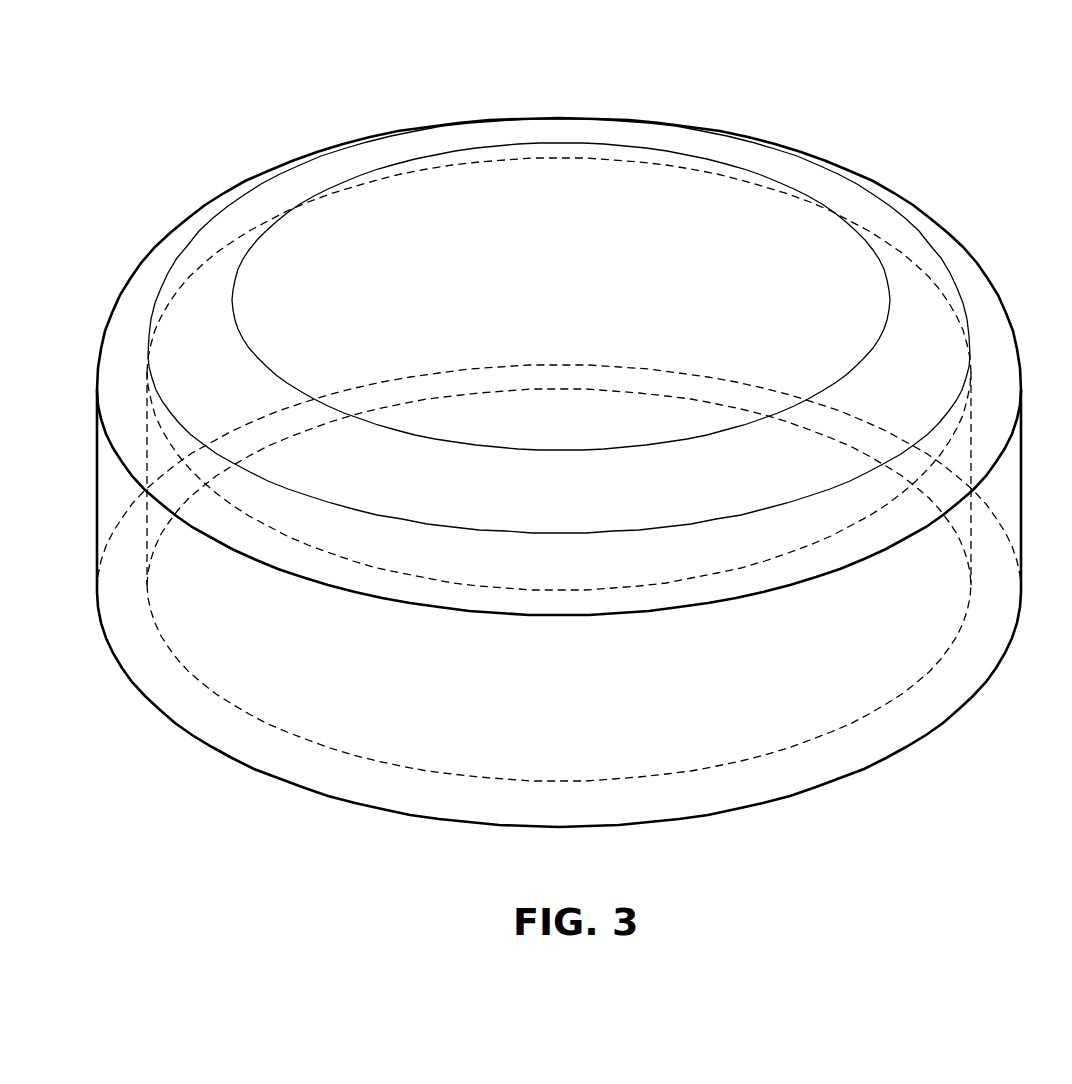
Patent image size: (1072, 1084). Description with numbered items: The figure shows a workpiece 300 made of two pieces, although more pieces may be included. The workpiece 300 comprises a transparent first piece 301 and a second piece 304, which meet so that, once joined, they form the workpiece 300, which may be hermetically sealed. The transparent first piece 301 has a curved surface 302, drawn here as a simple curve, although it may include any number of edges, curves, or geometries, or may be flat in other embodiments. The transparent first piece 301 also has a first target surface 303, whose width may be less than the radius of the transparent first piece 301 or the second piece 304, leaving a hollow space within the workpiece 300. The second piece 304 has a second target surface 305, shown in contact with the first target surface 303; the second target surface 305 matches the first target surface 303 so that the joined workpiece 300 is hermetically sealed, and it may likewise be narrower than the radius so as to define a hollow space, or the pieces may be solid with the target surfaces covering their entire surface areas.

The workpiece 300 is at (895, 110).
The transparent first piece 301 is at (740, 133).
The curved surface 302 is at (202, 217).
The first target surface 303 is at (907, 540).
The second piece 304 is at (137, 690).
The second target surface 305 is at (948, 487).